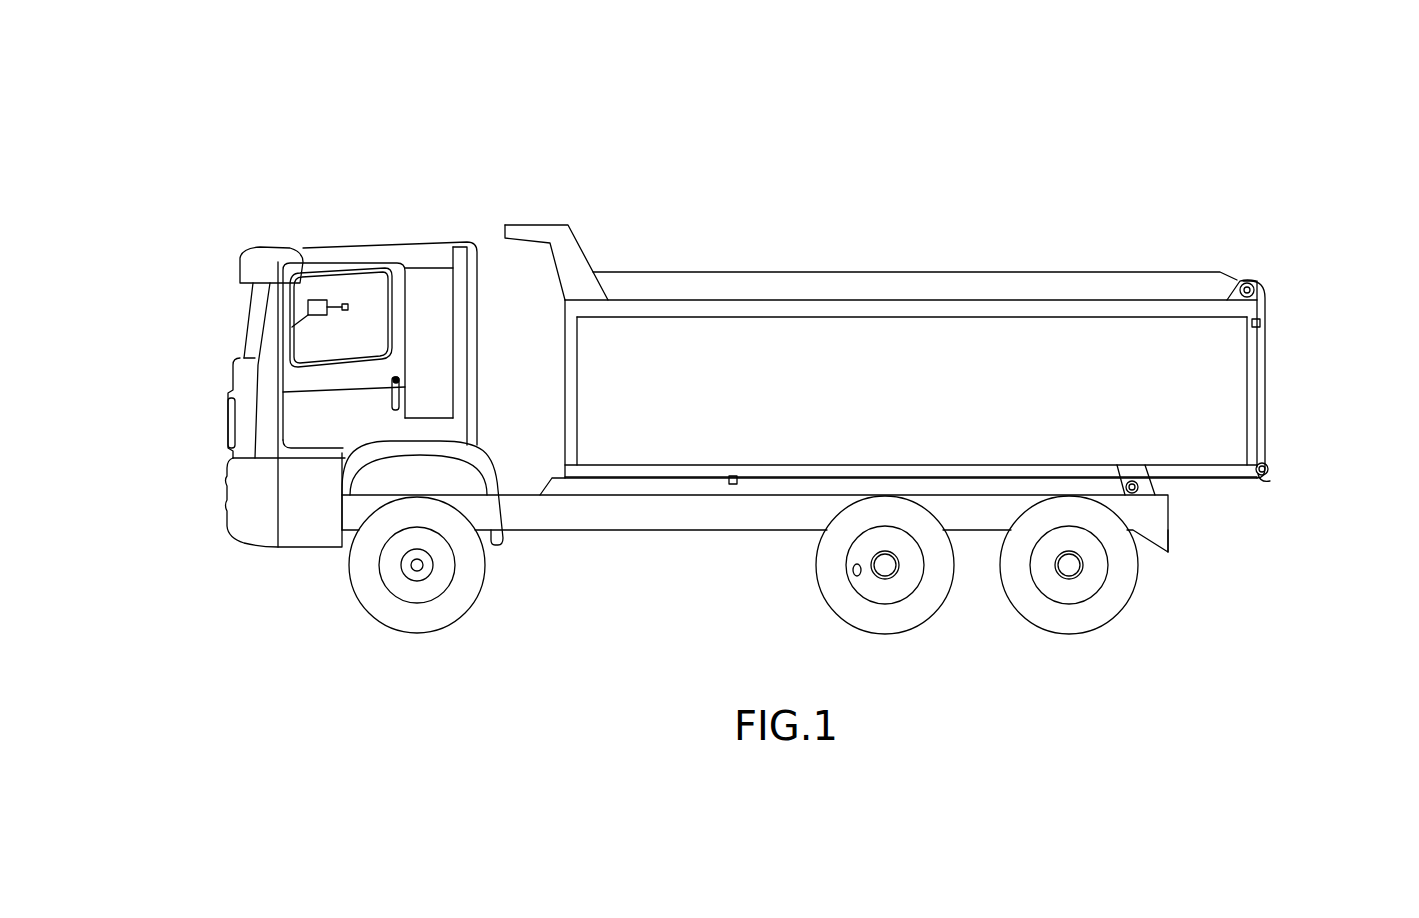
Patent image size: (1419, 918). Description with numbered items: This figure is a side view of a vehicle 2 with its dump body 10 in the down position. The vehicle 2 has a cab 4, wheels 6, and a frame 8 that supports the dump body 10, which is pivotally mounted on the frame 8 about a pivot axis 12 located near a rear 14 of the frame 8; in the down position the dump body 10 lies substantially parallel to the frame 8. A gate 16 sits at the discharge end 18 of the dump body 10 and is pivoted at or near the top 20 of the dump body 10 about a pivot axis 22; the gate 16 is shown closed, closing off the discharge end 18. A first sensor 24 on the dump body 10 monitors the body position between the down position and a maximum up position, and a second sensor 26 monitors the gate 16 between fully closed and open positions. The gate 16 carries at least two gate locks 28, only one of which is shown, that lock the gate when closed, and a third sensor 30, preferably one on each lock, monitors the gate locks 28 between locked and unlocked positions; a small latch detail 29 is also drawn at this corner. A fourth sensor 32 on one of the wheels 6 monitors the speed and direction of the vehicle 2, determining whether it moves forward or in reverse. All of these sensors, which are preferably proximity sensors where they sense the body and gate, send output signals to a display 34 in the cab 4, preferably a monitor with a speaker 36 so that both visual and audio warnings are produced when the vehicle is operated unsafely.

The vehicle 2 is at (1052, 193).
The cab 4 is at (390, 249).
The wheels 6 is at (403, 618).
The frame 8 is at (582, 515).
The dump body 10 is at (700, 327).
The pivot axis 12 is at (1143, 483).
The rear 14 is at (1172, 540).
The gate 16 is at (1267, 367).
The discharge end 18 is at (1253, 390).
The top 20 is at (833, 297).
The pivot axis 22 is at (1246, 283).
The first sensor 24 is at (733, 487).
The second sensor 26 is at (1262, 322).
The gate locks 28 is at (1265, 467).
The latch hook 29 is at (1269, 475).
The third sensor 30 is at (1260, 483).
The fourth sensor 32 is at (852, 572).
The display 34 is at (308, 307).
The speaker 36 is at (345, 303).